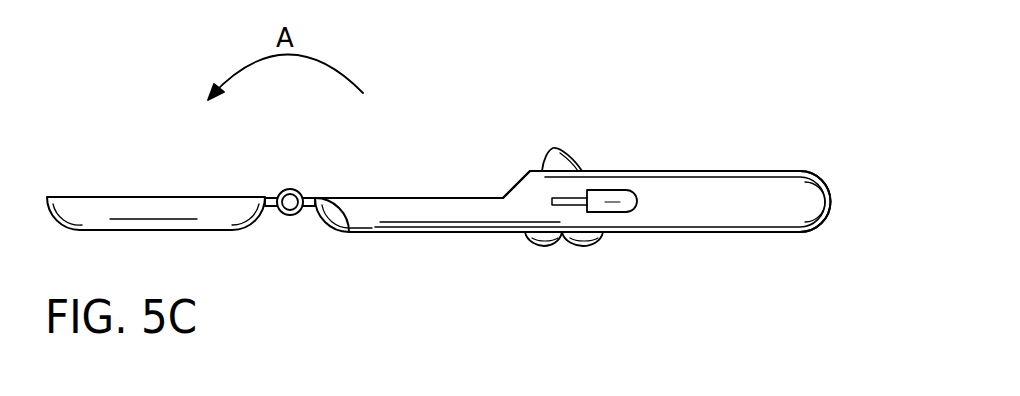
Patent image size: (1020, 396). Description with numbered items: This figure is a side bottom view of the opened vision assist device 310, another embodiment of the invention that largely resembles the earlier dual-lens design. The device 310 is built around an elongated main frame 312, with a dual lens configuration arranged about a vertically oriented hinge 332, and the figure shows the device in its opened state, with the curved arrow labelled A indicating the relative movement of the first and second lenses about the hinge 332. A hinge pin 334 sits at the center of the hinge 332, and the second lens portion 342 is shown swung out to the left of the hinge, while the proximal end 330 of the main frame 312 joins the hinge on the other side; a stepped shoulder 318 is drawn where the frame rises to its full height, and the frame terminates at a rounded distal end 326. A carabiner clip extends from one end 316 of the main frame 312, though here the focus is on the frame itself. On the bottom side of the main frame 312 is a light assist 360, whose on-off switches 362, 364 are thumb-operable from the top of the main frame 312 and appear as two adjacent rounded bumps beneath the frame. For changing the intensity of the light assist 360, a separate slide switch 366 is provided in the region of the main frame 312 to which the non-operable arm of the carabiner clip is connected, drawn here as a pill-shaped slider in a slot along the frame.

The device 310 is at (430, 160).
The main frame 312 is at (747, 213).
The end of main frame 316 is at (422, 215).
The shoulder of housing 318 is at (508, 186).
The distal end of housing 326 is at (828, 198).
The proximal end of housing 330 is at (342, 196).
The hinge 332 is at (279, 193).
The hinge pin 334 is at (302, 210).
The cap 342 is at (118, 204).
The light assist 360 is at (566, 160).
The on-off switch 362 is at (585, 238).
The on-off switch 364 is at (538, 238).
The slide switch 366 is at (625, 206).